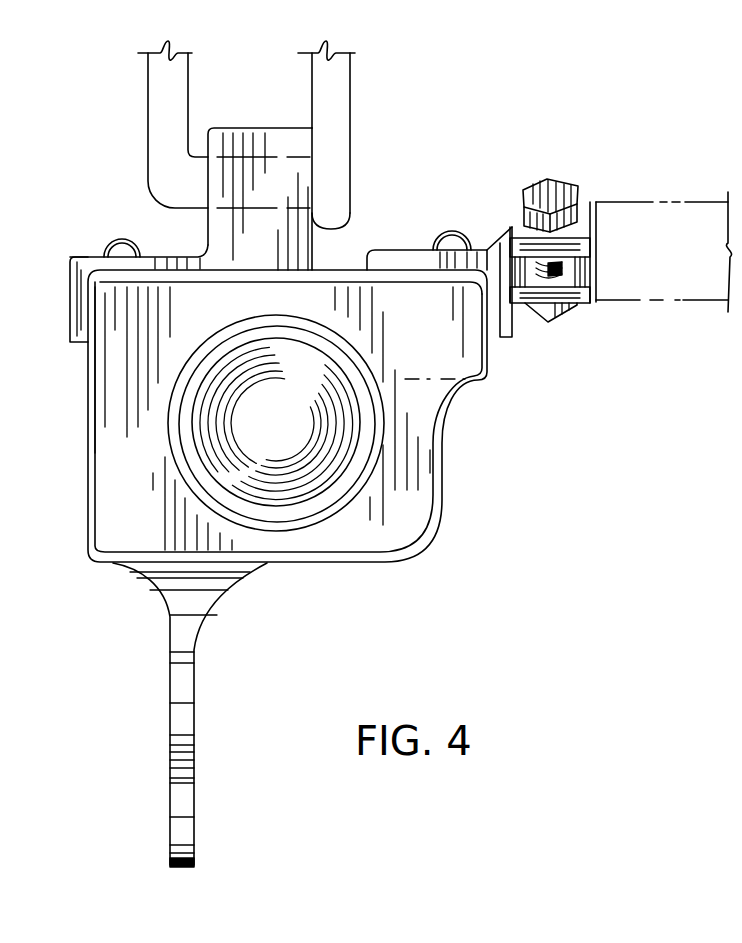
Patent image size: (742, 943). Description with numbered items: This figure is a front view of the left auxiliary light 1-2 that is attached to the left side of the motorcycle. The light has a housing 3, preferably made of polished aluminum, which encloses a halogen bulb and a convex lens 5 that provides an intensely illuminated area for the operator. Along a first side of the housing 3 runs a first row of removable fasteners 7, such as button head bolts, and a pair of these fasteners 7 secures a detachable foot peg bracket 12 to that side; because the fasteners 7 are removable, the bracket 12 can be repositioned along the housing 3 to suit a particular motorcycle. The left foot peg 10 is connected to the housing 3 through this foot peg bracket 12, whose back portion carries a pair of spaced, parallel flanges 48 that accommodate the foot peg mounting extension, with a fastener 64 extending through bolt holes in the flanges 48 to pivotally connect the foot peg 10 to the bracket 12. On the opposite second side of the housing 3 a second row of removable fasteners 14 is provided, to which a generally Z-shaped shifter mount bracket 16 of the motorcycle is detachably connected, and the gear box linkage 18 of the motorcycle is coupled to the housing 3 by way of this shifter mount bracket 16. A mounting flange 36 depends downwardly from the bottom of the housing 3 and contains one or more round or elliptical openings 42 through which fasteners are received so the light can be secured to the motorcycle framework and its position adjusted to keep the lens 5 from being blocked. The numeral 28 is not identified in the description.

The left auxiliary light 1-2 is at (372, 189).
The housing 3 is at (413, 535).
The convex lens 5 is at (302, 422).
The removable fasteners 7 is at (445, 230).
The left foot peg 10 is at (645, 202).
The detachable foot peg bracket 12 is at (510, 320).
The removable fasteners 14 is at (127, 236).
The shifter mount bracket 16 is at (75, 315).
The gear box linkage 18 is at (157, 152).
The right tube 28 is at (349, 105).
The mounting flange 36 is at (195, 750).
The openings 42 is at (187, 673).
The flanges 48 is at (583, 198).
The fastener 64 is at (560, 185).